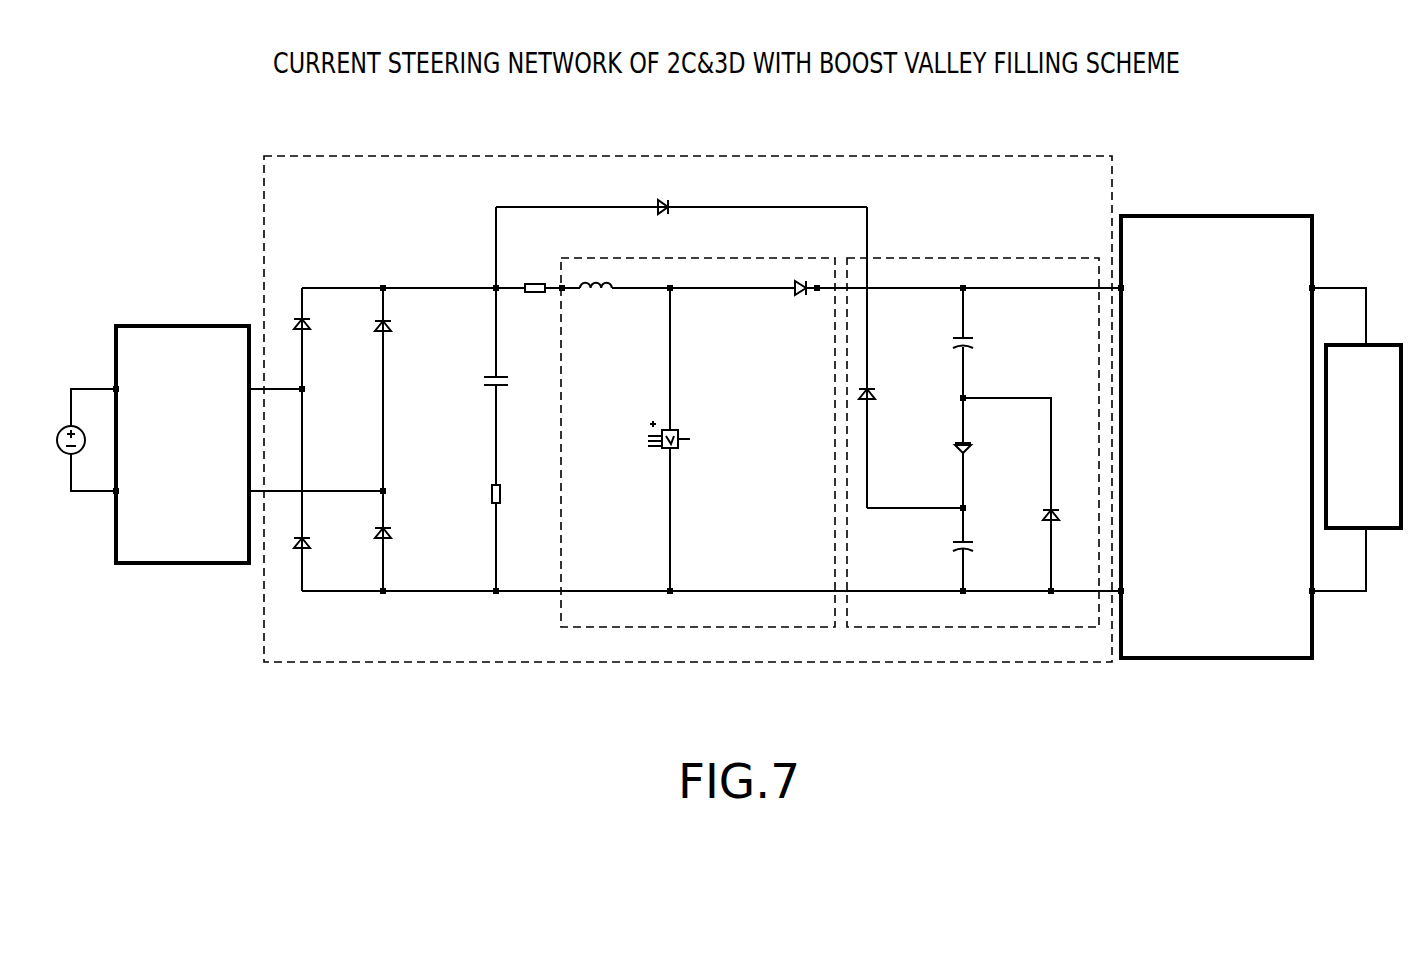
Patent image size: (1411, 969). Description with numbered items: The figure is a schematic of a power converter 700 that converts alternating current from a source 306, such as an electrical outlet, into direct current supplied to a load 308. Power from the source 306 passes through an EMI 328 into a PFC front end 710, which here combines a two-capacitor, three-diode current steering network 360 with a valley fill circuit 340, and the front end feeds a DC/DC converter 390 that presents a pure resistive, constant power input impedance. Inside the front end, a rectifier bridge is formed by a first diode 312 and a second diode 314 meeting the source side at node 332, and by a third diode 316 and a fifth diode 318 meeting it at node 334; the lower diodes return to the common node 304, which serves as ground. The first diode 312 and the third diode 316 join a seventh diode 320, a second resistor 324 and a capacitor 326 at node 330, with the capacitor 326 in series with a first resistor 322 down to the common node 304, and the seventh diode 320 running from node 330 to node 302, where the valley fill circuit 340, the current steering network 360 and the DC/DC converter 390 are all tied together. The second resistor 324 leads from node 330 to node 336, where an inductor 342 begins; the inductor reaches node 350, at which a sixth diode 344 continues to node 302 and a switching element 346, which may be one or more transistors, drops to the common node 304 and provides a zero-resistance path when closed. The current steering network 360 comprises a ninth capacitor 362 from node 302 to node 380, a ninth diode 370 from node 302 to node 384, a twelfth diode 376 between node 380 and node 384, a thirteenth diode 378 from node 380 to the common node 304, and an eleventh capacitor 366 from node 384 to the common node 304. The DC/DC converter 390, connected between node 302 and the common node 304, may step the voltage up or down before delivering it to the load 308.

The power converter 700 is at (1228, 108).
The PFC front end 710 is at (712, 156).
The node 302 is at (908, 288).
The common node 304 is at (773, 592).
The alternating current source 306 is at (68, 456).
The load 308 is at (1382, 345).
The diode (D1) 312 is at (296, 323).
The diode (D2) 314 is at (296, 548).
The diode (D3) 316 is at (390, 325).
The diode (D5) 318 is at (392, 532).
The diode (D7) 320 is at (668, 212).
The resistor (R7) 322 is at (490, 494).
The resistor (R13) 324 is at (538, 284).
The capacitor (C2) 326 is at (485, 381).
The EMI 328 is at (133, 565).
The node 330 is at (420, 285).
The node 332 is at (306, 389).
The node 334 is at (388, 492).
The node 336 is at (563, 292).
The valley fill circuit 340 is at (613, 628).
The inductor (L1) 342 is at (618, 283).
The diode (D6) 344 is at (790, 292).
The switching element (S3) 346 is at (648, 450).
The node 350 is at (668, 292).
The current steering network 360 is at (875, 628).
The capacitor (C9) 362 is at (955, 340).
The capacitor (C11) 366 is at (950, 545).
The diode (D9) 370 is at (873, 398).
The diode (D12) 376 is at (970, 452).
The diode (D13) 378 is at (1053, 510).
The node 380 is at (968, 398).
The node 384 is at (958, 508).
The DC/DC converter 390 is at (1207, 658).